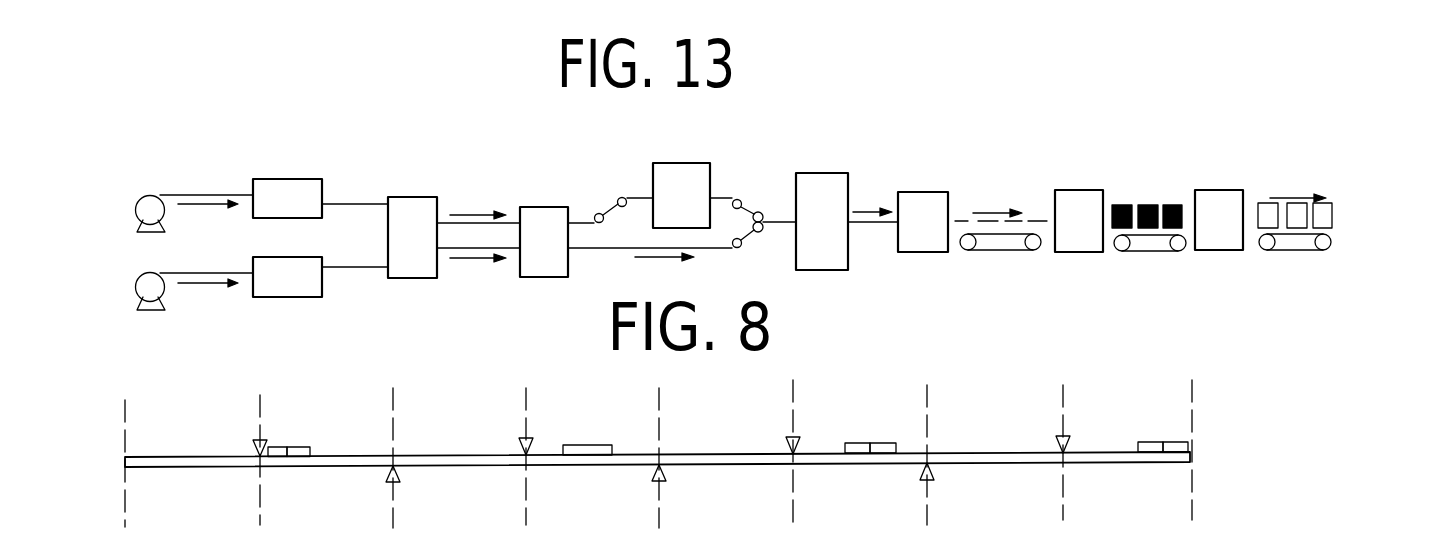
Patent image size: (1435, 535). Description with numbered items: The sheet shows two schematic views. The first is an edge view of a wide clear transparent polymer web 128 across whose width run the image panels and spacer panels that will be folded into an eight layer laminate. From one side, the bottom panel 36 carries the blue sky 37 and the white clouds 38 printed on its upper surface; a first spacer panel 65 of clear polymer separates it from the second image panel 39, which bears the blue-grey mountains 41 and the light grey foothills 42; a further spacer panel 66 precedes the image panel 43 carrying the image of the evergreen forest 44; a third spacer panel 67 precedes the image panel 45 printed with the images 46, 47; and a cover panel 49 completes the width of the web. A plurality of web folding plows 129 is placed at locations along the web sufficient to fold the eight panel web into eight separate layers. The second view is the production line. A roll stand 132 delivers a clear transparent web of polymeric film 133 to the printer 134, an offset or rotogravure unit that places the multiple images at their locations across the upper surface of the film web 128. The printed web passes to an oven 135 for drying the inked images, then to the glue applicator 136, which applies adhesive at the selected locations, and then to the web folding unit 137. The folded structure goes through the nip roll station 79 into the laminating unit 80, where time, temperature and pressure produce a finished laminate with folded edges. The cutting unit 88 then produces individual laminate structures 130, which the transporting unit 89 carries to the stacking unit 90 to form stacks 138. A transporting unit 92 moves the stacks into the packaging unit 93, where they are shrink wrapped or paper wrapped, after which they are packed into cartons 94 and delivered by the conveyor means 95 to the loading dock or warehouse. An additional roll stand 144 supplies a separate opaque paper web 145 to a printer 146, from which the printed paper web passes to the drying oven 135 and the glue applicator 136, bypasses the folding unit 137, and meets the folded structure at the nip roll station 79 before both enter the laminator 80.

In FIG. 13, the roll stand 132 is at (149, 214).
In FIG. 13, the clear transparent web of polymeric film 133 is at (190, 193).
In FIG. 13, the printer 134 is at (297, 192).
In FIG. 13, the wide web 128 is at (345, 200).
In FIG. 8, the wide web 128 is at (166, 440).
In FIG. 13, the oven 135 is at (430, 210).
In FIG. 13, the additional roll stand 144 is at (152, 289).
In FIG. 13, the opaque paper web 145 is at (180, 270).
In FIG. 13, the printer 146 is at (280, 282).
In FIG. 13, the glue applicator 136 is at (555, 215).
In FIG. 13, the web folding unit 137 is at (683, 175).
In FIG. 13, the nip roll station 79 is at (752, 215).
In FIG. 13, the laminating unit 80 is at (822, 185).
In FIG. 13, the cutting unit 88 is at (922, 200).
In FIG. 13, the laminate structure 130 is at (957, 221).
In FIG. 13, the transporting unit 89 is at (995, 255).
In FIG. 13, the stacking unit 90 is at (1080, 203).
In FIG. 13, the transporting unit 92 is at (1145, 255).
In FIG. 13, the stacks 138 is at (1120, 205).
In FIG. 13, the packaging unit 93 is at (1212, 200).
In FIG. 13, the cartons 94 is at (1265, 203).
In FIG. 13, the conveyor means 95 is at (1290, 255).
In FIG. 8, the web folding plows 129 is at (258, 442).
In FIG. 8, the image 46 is at (280, 447).
In FIG. 8, the image 47 is at (302, 447).
In FIG. 8, the cover panel 49 is at (243, 468).
In FIG. 8, the image panel 45 is at (348, 468).
In FIG. 8, the image of the evergreen forest 44 is at (573, 445).
In FIG. 8, the third spacer panel 67 is at (503, 468).
In FIG. 8, the image panel 43 is at (615, 467).
In FIG. 8, the spacer panel 66 is at (768, 466).
In FIG. 8, the light grey foothills 42 is at (850, 443).
In FIG. 8, the blue-grey mountains 41 is at (875, 443).
In FIG. 8, the second image panel 39 is at (880, 464).
In FIG. 8, the first spacer panel 65 is at (1030, 463).
In FIG. 8, the white clouds 38 is at (1153, 442).
In FIG. 8, the blue sky 37 is at (1175, 442).
In FIG. 8, the bottom panel 36 is at (1165, 463).